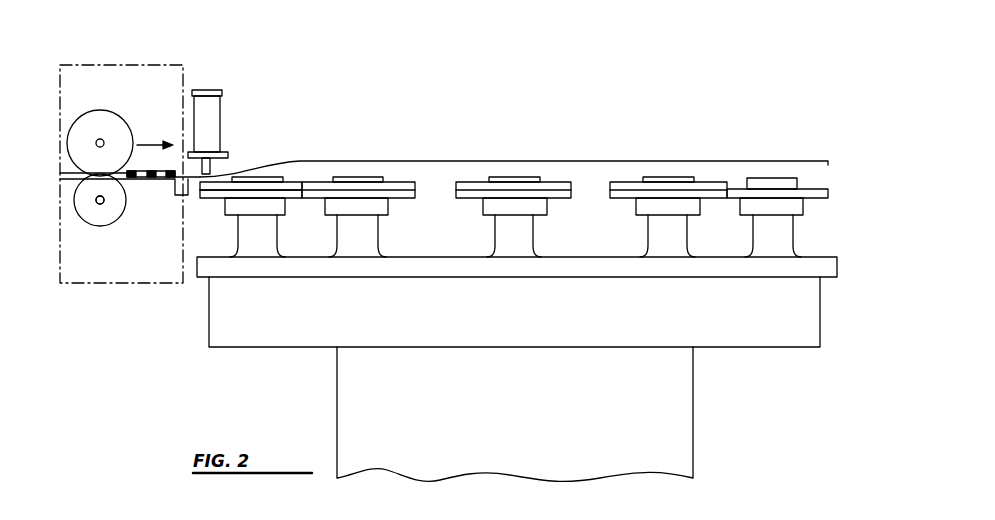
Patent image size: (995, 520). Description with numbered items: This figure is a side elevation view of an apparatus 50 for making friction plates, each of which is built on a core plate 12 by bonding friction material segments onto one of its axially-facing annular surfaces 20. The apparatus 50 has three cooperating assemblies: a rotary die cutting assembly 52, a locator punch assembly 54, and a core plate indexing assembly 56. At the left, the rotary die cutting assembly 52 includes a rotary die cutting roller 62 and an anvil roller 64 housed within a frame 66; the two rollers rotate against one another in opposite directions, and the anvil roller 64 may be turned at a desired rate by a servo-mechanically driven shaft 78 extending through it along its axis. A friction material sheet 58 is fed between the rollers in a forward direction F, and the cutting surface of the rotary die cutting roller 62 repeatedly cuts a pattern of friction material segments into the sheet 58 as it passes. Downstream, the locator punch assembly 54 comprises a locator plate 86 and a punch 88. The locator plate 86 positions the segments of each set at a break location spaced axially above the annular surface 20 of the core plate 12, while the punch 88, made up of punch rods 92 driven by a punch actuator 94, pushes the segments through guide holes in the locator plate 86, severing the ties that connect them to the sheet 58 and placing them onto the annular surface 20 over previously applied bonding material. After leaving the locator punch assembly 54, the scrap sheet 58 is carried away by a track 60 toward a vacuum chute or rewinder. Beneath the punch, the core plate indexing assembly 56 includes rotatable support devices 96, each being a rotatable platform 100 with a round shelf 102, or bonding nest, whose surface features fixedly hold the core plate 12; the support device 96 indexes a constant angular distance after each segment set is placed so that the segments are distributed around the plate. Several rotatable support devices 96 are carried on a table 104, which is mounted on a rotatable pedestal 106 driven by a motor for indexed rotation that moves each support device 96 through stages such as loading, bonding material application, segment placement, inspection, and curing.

The core plate 12 is at (298, 184).
The annular surface 20 is at (293, 183).
The apparatus 50 is at (590, 90).
The rotary die cutting assembly 52 is at (122, 149).
The locator punch assembly 54 is at (280, 134).
The core plate indexing assembly 56 is at (186, 305).
The friction material sheet 58 is at (62, 171).
The track 60 is at (672, 160).
The rotary die cutting roller 62 is at (93, 128).
The anvil roller 64 is at (93, 218).
The frame 66 is at (155, 65).
The servo-mechanically driven shaft 78 is at (105, 203).
The locator plate 86 is at (190, 170).
The punch 88 is at (226, 150).
The punch rods 92 is at (212, 168).
The punch actuator 94 is at (208, 96).
The rotatable support device 96 is at (260, 255).
The rotatable platform 100 is at (244, 254).
The round shelf 102 is at (284, 196).
The table 104 is at (237, 335).
The rotatable pedestal 106 is at (365, 385).
The forward direction F is at (155, 133).